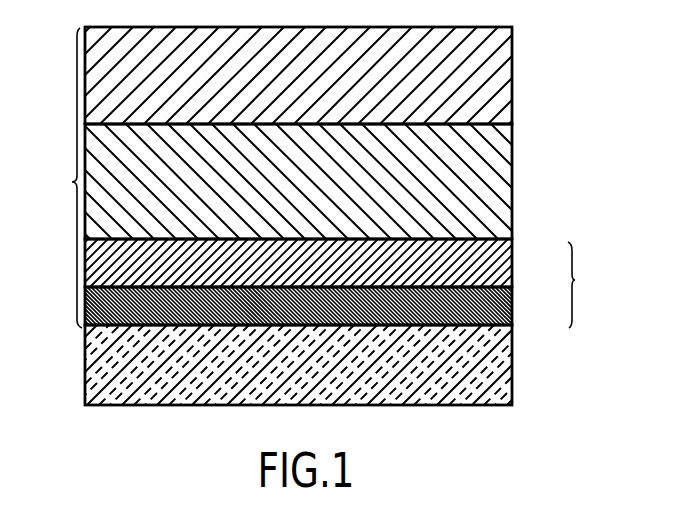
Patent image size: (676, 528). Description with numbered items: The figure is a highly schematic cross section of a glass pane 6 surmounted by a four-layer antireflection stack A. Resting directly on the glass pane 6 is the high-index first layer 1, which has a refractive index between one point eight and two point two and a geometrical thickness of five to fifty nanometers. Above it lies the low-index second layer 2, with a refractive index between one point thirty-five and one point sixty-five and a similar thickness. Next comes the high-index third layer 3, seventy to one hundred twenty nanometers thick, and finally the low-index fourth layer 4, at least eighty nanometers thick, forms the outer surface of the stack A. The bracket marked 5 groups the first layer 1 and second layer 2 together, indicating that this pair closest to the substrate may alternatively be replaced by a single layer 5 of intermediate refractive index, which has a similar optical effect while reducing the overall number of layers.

The high-index first layer 1 is at (492, 300).
The low-index second layer 2 is at (497, 257).
The high-index third layer 3 is at (490, 176).
The low-index fourth layer 4 is at (484, 70).
The single intermediate-index layer 5 is at (582, 285).
The glass pane 6 is at (493, 362).
The four-layer antireflection stack A is at (67, 178).